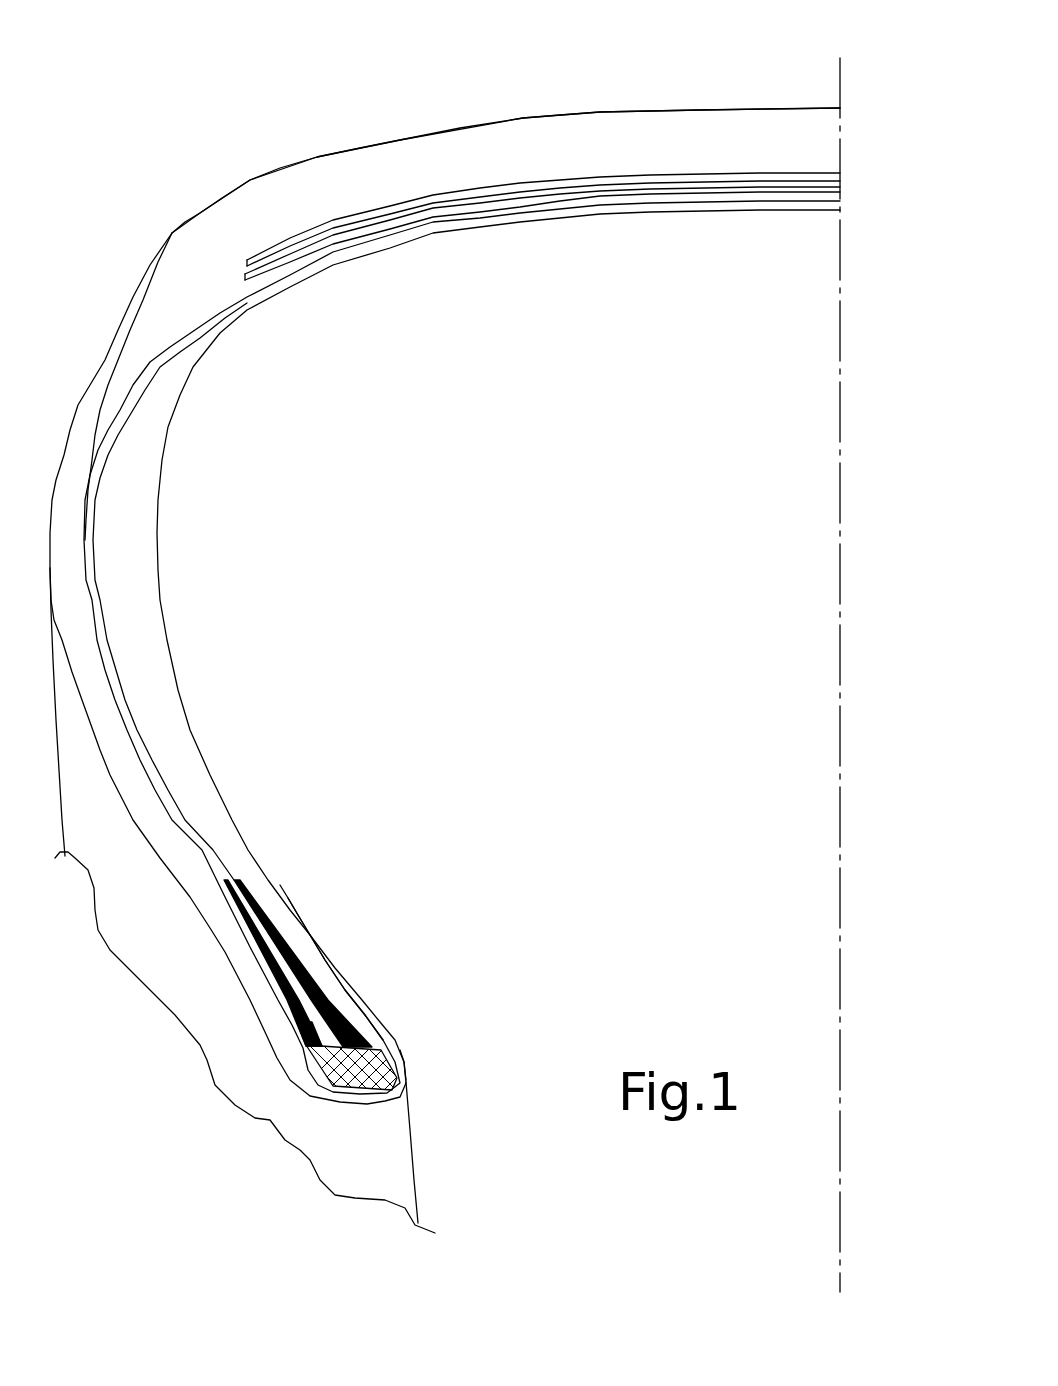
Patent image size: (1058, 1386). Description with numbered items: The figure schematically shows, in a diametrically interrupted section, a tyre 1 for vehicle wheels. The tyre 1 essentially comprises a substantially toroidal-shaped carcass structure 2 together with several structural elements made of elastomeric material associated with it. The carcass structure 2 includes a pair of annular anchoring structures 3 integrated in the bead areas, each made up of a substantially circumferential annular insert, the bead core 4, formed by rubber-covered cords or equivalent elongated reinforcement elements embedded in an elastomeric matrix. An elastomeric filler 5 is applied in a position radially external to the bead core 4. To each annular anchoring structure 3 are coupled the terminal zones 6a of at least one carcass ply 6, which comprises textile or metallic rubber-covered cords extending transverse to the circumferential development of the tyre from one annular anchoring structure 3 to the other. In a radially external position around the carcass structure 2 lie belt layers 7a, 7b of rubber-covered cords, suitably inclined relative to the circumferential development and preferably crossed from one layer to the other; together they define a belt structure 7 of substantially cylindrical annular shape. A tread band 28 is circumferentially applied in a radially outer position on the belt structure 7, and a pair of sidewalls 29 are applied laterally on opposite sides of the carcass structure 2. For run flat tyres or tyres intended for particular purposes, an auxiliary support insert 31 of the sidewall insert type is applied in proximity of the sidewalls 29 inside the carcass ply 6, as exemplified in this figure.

The tyre 1 is at (485, 671).
The carcass structure 2 is at (462, 647).
The annular anchoring structure 3 is at (378, 962).
The bead core 4 is at (389, 1066).
The elastomeric filler 5 is at (313, 960).
The carcass ply 6 is at (246, 862).
The terminal zone of the carcass ply 6a is at (266, 1120).
The belt structure 7 is at (542, 151).
The belt layer 7a is at (542, 151).
The belt layer 7b is at (543, 151).
The tread band 28 is at (506, 129).
The sidewall 29 is at (121, 355).
The auxiliary support insert 31 is at (495, 645).